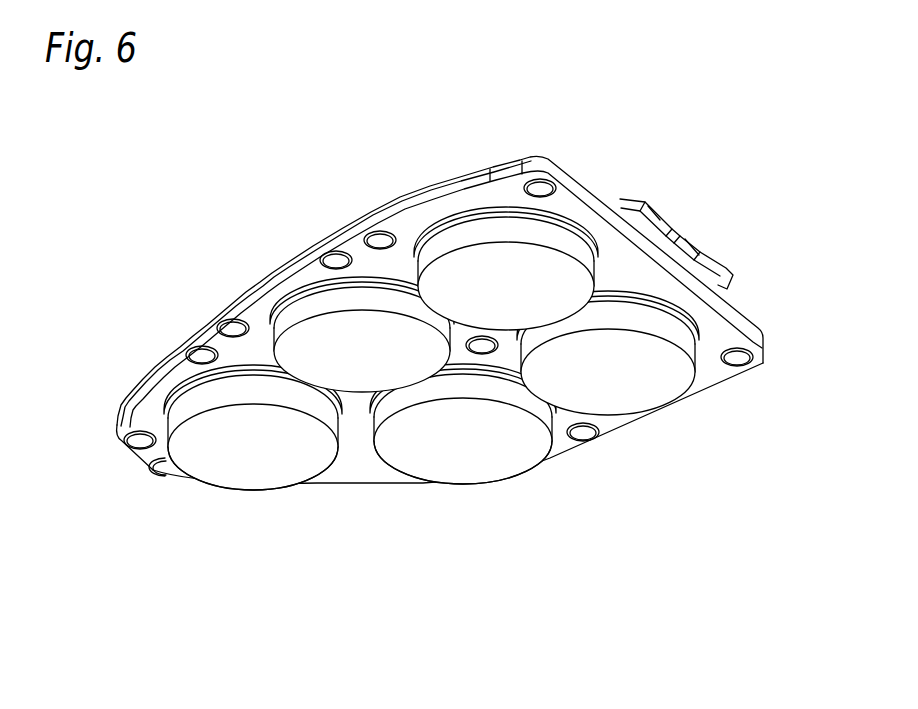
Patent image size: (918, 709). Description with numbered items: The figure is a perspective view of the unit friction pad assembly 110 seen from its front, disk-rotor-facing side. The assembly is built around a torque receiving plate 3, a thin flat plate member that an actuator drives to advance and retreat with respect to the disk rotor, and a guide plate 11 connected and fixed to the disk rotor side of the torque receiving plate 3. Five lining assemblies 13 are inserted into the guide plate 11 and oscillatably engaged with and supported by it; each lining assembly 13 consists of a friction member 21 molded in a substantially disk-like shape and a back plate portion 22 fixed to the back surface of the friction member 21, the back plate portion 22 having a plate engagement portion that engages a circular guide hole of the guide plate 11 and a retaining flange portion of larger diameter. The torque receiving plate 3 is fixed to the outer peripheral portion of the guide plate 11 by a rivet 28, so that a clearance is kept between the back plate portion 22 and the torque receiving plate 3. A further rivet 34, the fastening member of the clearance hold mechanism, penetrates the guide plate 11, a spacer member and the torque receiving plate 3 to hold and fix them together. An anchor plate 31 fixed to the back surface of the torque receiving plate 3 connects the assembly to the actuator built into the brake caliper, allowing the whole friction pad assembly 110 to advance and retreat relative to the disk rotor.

The friction pad assembly 110 is at (431, 338).
The torque receiving plate 3 is at (452, 310).
The guide plate 11 is at (716, 387).
The lining assembly 13 is at (209, 482).
The friction member 21 is at (423, 338).
The back plate portion 22 is at (440, 218).
The rivet 28 is at (186, 362).
The anchor plate 31 is at (698, 226).
The rivet 34 is at (484, 345).